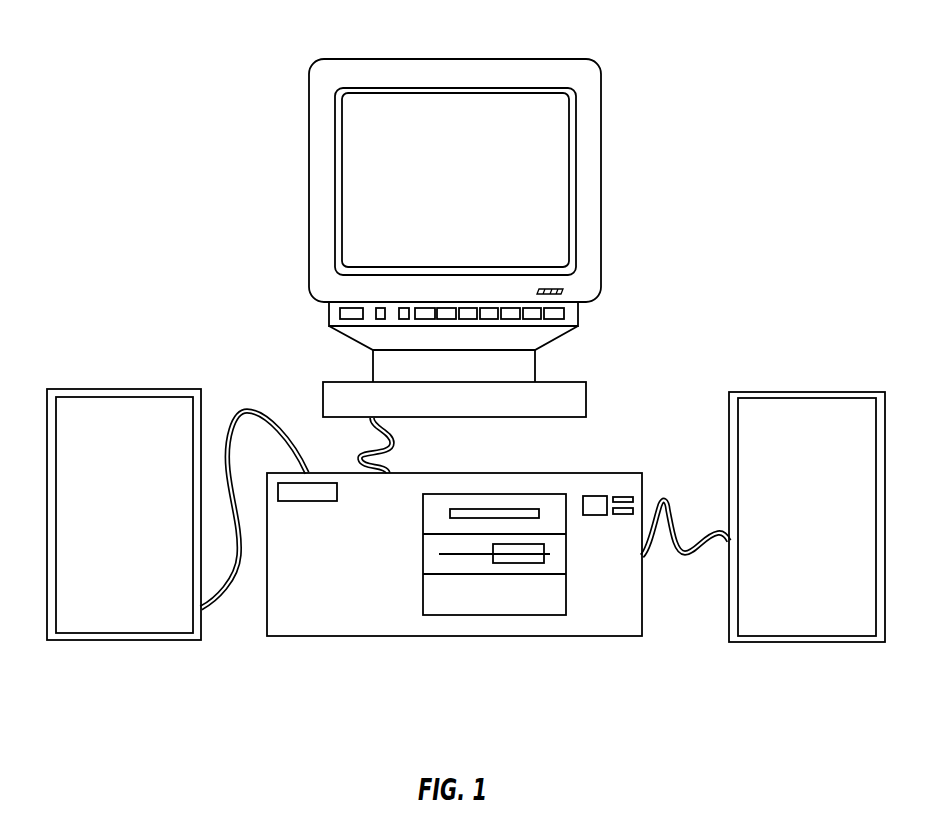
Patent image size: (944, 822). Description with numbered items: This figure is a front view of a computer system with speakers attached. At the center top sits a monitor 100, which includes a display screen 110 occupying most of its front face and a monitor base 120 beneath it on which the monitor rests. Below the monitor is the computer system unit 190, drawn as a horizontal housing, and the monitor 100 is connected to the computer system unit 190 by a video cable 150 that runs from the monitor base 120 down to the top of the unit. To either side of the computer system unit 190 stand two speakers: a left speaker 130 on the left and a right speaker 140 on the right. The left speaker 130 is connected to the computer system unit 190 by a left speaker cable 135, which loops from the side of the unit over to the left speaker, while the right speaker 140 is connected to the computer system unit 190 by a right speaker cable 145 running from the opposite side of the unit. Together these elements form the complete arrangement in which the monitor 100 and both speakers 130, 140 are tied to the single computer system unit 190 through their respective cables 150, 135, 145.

The monitor 100 is at (412, 58).
The display screen 110 is at (481, 108).
The monitor base 120 is at (587, 399).
The left speaker 130 is at (127, 389).
The left speaker cable 135 is at (245, 408).
The right speaker 140 is at (808, 392).
The right speaker cable 145 is at (720, 546).
The video cable 150 is at (388, 423).
The computer system unit 190 is at (426, 636).